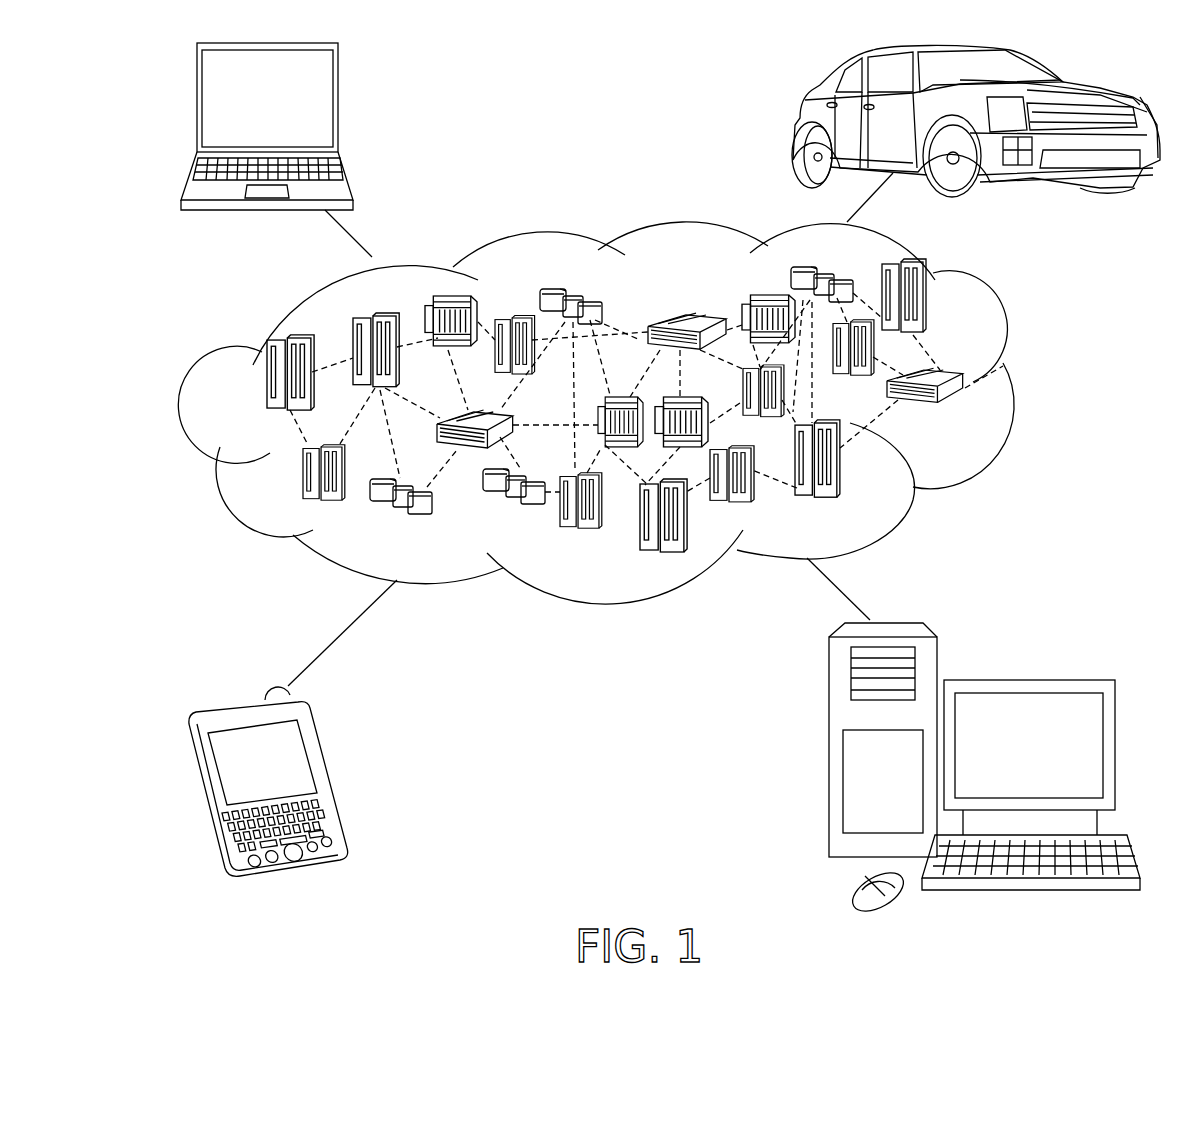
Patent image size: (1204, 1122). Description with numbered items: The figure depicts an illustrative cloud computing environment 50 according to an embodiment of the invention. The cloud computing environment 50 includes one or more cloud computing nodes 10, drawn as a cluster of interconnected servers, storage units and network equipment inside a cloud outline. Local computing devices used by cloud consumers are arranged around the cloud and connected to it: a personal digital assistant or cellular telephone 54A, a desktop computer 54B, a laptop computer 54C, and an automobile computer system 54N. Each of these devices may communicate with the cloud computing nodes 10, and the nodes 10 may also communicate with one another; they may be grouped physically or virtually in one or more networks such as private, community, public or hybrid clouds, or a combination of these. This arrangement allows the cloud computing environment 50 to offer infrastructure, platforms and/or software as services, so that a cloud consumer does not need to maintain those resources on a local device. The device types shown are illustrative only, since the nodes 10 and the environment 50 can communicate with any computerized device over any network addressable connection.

The cloud computing nodes 10 is at (980, 420).
The cloud computing environment 50 is at (1028, 384).
The personal digital assistant (PDA) or cellular telephone 54A is at (330, 777).
The desktop computer 54B is at (1027, 680).
The laptop computer 54C is at (338, 105).
The automobile computer system 54N is at (800, 120).